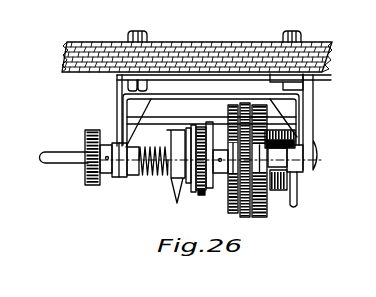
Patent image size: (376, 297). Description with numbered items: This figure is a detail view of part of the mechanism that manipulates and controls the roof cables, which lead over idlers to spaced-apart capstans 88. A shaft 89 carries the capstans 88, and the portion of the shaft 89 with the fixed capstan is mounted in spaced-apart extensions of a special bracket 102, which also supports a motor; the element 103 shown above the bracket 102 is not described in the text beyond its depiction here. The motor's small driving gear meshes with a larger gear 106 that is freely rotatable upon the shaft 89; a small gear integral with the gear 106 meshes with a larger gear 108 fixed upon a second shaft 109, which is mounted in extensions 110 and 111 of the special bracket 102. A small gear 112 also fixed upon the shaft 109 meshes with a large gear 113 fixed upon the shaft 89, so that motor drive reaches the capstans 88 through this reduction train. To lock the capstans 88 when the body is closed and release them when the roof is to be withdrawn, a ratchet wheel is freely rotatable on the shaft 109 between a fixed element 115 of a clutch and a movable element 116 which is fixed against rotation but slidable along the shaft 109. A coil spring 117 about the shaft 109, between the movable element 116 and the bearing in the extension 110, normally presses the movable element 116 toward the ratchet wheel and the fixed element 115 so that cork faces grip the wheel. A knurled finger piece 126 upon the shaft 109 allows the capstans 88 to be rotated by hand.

The perforated plate 103 is at (166, 44).
The special bracket 102 is at (118, 95).
The knurled finger piece 126 is at (85, 133).
The shaft 89 is at (53, 163).
The extension of the special bracket 110 is at (121, 172).
The shaft 109 is at (130, 178).
The coil spring 117 is at (148, 170).
The larger gear 106 is at (187, 220).
The fixed element of the clutch 115 is at (201, 127).
The movable element of the clutch 116 is at (228, 208).
The larger gear 108 is at (246, 218).
The large gear 113 is at (262, 218).
The small gear 112 is at (295, 140).
The extension of the special bracket 111 is at (305, 172).
The capstan 88 is at (279, 193).